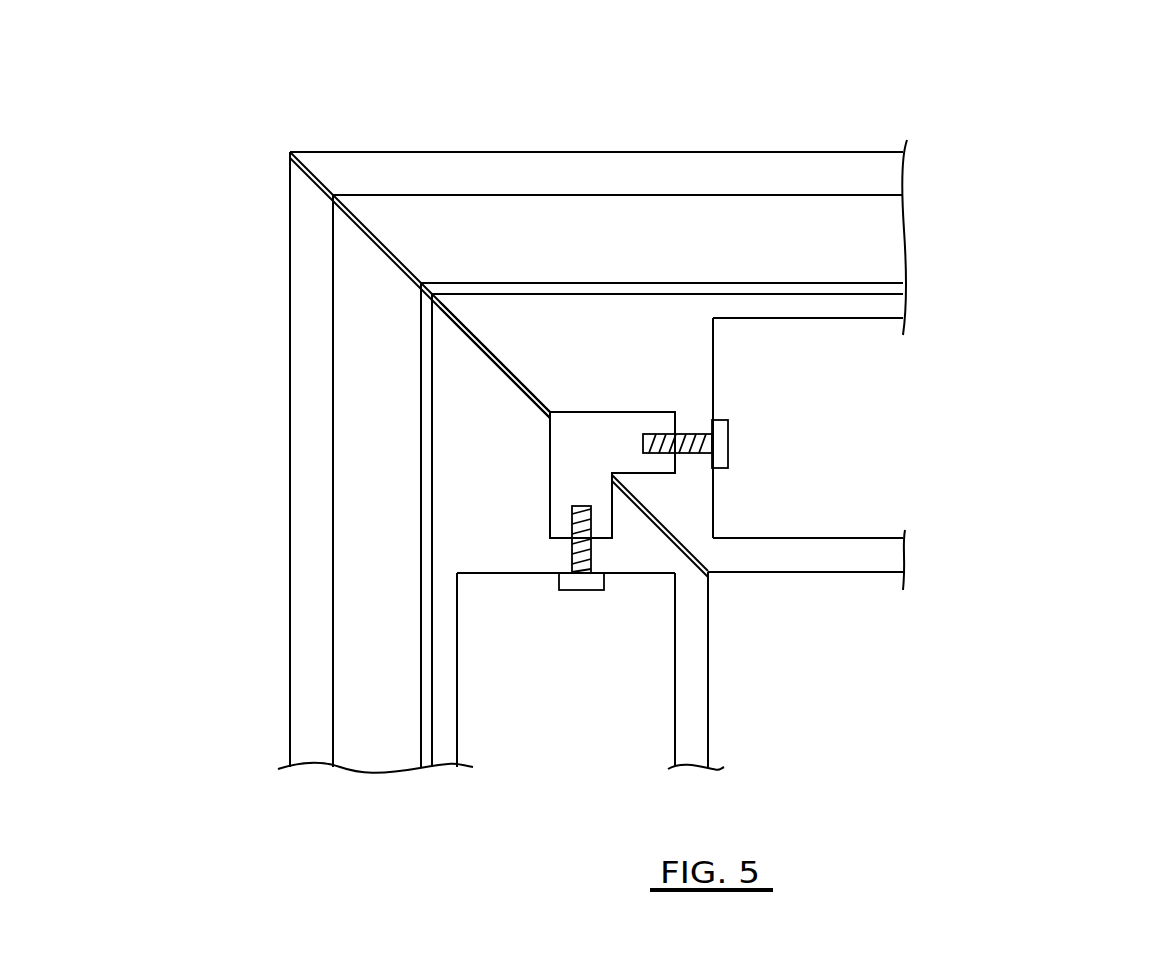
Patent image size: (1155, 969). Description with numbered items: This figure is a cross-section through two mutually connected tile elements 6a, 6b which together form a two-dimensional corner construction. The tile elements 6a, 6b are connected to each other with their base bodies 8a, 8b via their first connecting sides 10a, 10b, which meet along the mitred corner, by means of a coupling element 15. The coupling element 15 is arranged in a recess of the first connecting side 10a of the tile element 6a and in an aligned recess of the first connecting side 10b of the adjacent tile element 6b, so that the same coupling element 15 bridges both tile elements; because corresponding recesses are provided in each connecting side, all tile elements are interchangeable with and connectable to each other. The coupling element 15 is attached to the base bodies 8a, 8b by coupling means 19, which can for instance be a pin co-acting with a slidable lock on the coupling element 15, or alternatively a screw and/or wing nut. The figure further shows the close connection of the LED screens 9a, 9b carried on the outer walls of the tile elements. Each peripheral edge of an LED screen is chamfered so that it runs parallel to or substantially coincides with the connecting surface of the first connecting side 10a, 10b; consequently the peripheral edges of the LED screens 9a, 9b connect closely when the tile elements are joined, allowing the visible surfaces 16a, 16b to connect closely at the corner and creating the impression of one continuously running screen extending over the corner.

The tile element 6a is at (222, 318).
The tile element 6b is at (960, 129).
The base body 8a is at (697, 688).
The base body 8b is at (834, 563).
The LED screen 9a is at (298, 393).
The LED screen 9b is at (767, 158).
The first connecting side 10a is at (492, 360).
The first connecting side 10b is at (523, 380).
The coupling element 15 is at (627, 425).
The visible surface 16a is at (190, 479).
The visible surface 16b is at (580, 90).
The coupling means 19 is at (722, 445).